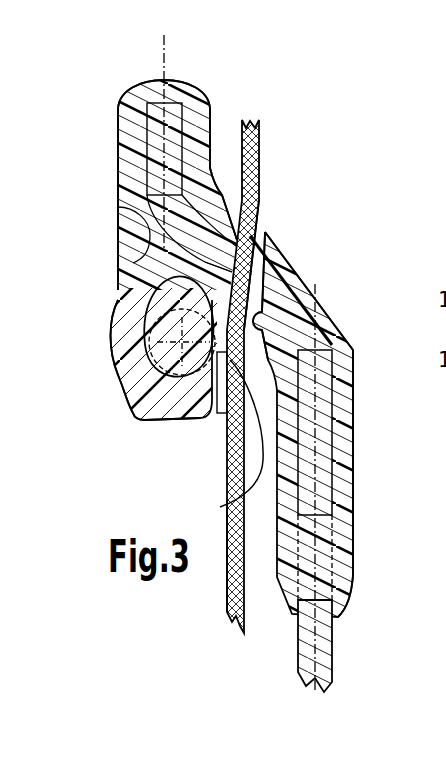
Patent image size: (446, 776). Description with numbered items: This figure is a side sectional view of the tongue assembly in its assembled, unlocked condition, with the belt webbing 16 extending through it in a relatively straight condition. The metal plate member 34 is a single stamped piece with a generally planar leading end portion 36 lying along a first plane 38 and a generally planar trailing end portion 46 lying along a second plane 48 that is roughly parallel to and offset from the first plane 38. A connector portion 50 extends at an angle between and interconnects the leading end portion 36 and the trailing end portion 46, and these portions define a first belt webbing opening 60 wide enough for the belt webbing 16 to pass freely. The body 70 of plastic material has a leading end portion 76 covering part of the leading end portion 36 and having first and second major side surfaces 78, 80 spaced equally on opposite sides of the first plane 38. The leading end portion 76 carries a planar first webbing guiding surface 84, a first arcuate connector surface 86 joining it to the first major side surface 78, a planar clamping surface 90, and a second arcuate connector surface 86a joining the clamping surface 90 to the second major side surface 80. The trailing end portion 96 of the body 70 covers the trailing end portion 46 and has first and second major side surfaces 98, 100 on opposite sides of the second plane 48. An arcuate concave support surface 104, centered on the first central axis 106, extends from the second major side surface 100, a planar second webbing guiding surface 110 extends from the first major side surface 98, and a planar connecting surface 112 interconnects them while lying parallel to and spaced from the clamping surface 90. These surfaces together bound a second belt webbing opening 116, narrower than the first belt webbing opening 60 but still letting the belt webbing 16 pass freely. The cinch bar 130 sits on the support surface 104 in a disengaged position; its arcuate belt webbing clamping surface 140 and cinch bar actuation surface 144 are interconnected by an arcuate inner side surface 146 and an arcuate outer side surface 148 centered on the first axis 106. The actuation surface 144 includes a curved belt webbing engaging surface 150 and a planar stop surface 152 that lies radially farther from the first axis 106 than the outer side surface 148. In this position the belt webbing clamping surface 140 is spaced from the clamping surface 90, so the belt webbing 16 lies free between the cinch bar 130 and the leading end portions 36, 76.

The belt webbing 16 is at (265, 153).
The plate member 34 is at (341, 646).
The leading end portion 36 is at (333, 513).
The first plane 38 is at (316, 284).
The trailing end portion 46 is at (197, 105).
The second plane 48 is at (165, 43).
The connector portion 50 is at (118, 193).
The first belt webbing opening 60 is at (222, 264).
The body of plastic material 70 is at (362, 382).
The leading end portion 76 is at (340, 567).
The first major side surface 78 is at (355, 541).
The second major side surface 80 is at (244, 556).
The first webbing guiding surface 84 is at (262, 323).
The first arcuate connector surface 86 is at (284, 280).
The second arcuate connector surface 86a is at (240, 490).
The clamping surface 90 is at (218, 372).
The trailing end portion 96 is at (122, 108).
The first major side surface 98 is at (212, 132).
The second major side surface 100 is at (118, 132).
The support surface 104 is at (127, 266).
The first central axis 106 is at (180, 345).
The second webbing guiding surface 110 is at (267, 262).
The connecting surface 112 is at (230, 301).
The second belt webbing opening 116 is at (128, 413).
The cinch bar 130 is at (107, 337).
The belt webbing clamping surface 140 is at (263, 307).
The cinch bar actuation surface 144 is at (133, 433).
The inner side surface 146 is at (128, 366).
The outer side surface 148 is at (117, 335).
The belt webbing engaging surface 150 is at (197, 437).
The stop surface 152 is at (125, 393).